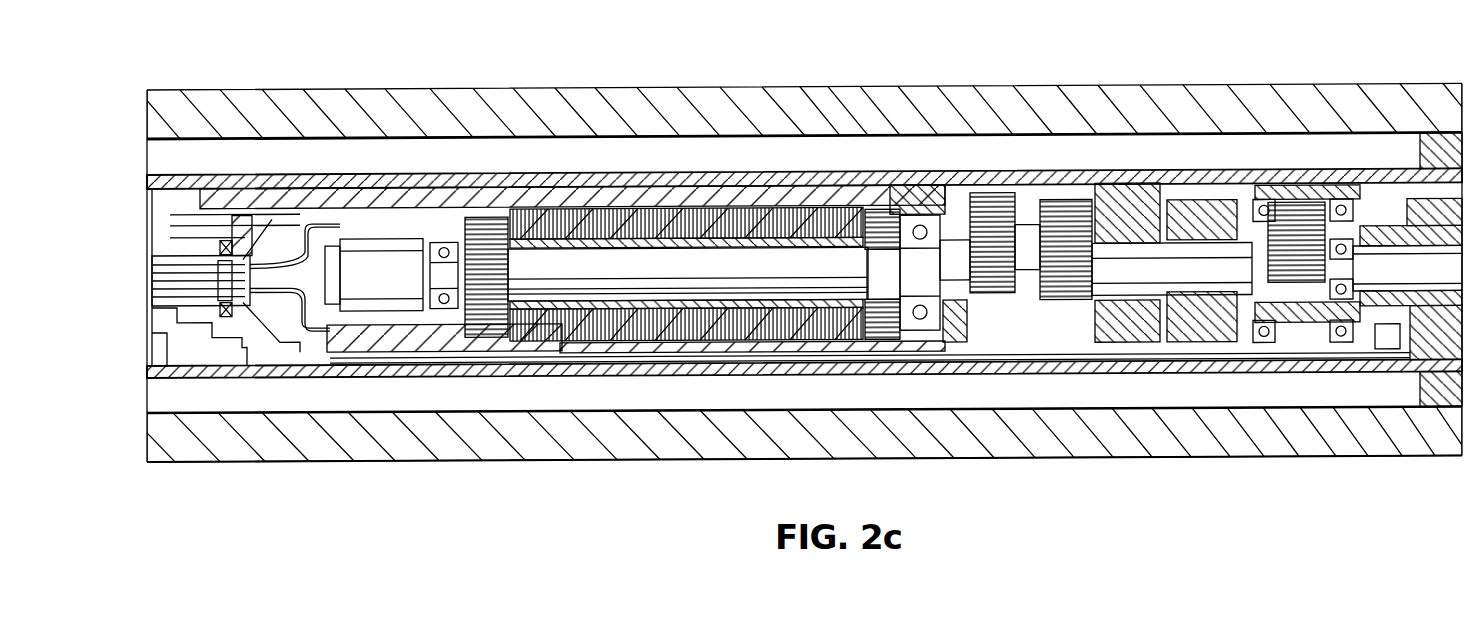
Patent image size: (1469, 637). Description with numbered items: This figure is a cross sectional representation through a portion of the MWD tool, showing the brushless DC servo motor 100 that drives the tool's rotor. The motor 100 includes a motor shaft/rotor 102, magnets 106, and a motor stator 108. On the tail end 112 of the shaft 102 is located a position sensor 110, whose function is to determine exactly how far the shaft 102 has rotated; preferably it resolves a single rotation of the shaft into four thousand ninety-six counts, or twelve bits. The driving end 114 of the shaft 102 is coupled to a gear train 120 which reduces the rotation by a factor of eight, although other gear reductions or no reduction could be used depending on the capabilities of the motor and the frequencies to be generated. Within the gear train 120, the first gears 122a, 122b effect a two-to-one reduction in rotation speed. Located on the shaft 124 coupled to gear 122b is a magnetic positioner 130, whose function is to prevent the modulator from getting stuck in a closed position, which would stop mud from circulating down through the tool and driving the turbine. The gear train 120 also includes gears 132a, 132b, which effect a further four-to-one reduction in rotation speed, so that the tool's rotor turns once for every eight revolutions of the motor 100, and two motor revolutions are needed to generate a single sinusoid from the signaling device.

The brushless DC servo motor 100 is at (647, 157).
The motor shaft/rotor 102 is at (765, 265).
The magnets 106 is at (683, 236).
The motor stator 108 is at (715, 243).
The position sensor 110 is at (380, 250).
The tail end 112 is at (445, 279).
The driving end 114 is at (915, 266).
The gear train 120 is at (1075, 192).
The first gear 122a is at (1020, 200).
The first gear 122b is at (1080, 208).
The shaft 124 is at (1173, 258).
The magnetic positioner 130 is at (1213, 305).
The gear 132a is at (1283, 276).
The gear 132b is at (1318, 211).